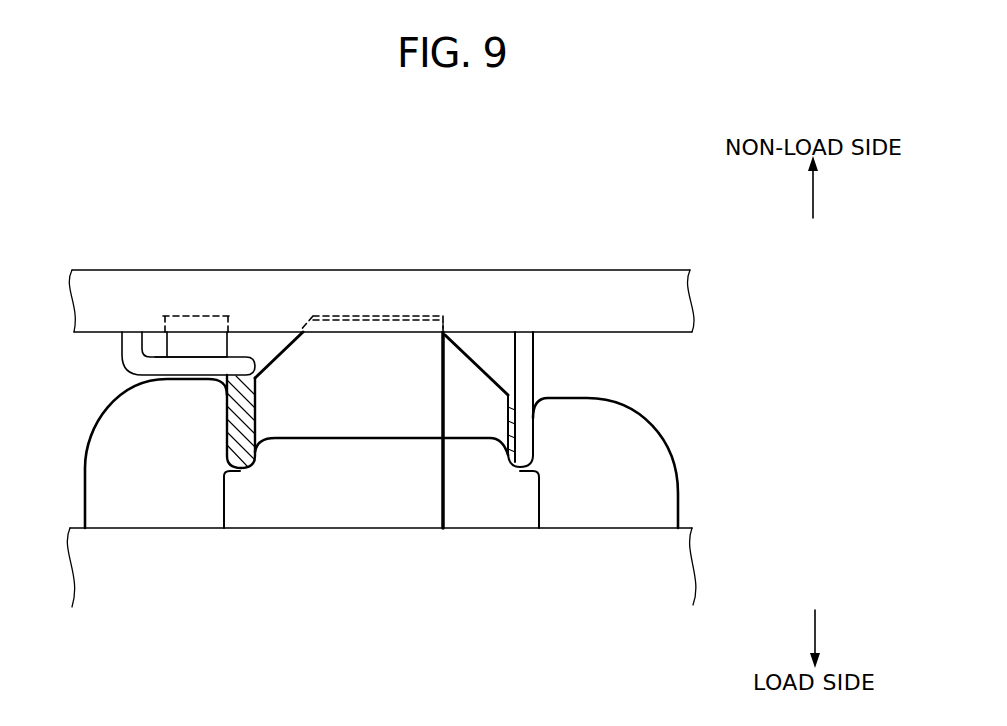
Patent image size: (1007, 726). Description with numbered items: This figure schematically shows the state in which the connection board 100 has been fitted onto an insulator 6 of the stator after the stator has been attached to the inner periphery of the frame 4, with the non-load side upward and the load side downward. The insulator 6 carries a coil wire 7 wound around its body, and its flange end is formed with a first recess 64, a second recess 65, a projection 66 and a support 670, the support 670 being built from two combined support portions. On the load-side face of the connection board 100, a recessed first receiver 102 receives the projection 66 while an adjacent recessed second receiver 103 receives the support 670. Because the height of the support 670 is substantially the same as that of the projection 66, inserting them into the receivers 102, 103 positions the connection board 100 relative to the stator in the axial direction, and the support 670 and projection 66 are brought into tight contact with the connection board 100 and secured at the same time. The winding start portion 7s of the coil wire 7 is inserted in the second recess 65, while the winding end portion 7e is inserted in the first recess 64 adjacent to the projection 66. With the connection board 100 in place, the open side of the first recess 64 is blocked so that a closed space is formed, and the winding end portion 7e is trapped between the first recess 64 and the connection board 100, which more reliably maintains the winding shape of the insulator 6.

The connection board 100 is at (704, 273).
The frame 4 is at (88, 575).
The insulator 6 is at (697, 441).
The coil wire 7 is at (226, 424).
The winding end portion 7e is at (152, 362).
The winding start portion 7s is at (528, 372).
The first recess 64 is at (237, 470).
The second recess 65 is at (518, 450).
The projection 66 is at (188, 338).
The first receiver 102 is at (212, 318).
The second receiver 103 is at (440, 326).
The support 670 is at (368, 350).